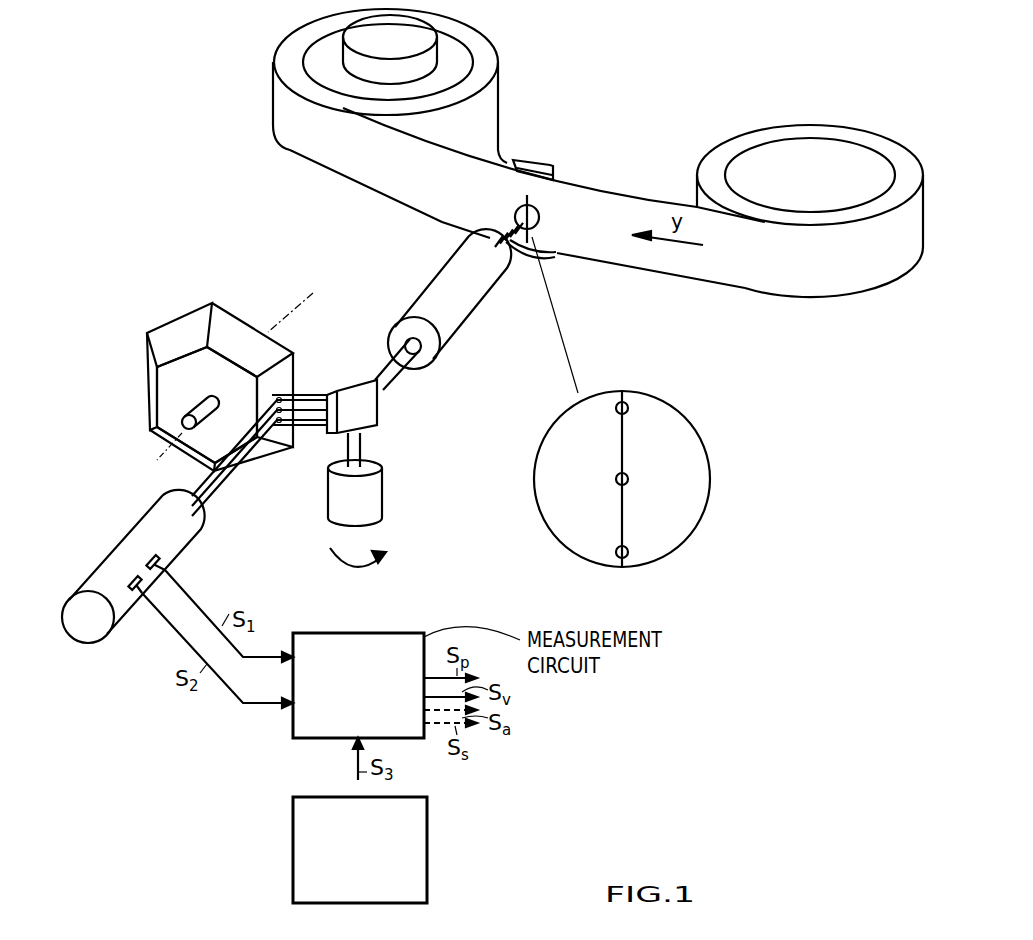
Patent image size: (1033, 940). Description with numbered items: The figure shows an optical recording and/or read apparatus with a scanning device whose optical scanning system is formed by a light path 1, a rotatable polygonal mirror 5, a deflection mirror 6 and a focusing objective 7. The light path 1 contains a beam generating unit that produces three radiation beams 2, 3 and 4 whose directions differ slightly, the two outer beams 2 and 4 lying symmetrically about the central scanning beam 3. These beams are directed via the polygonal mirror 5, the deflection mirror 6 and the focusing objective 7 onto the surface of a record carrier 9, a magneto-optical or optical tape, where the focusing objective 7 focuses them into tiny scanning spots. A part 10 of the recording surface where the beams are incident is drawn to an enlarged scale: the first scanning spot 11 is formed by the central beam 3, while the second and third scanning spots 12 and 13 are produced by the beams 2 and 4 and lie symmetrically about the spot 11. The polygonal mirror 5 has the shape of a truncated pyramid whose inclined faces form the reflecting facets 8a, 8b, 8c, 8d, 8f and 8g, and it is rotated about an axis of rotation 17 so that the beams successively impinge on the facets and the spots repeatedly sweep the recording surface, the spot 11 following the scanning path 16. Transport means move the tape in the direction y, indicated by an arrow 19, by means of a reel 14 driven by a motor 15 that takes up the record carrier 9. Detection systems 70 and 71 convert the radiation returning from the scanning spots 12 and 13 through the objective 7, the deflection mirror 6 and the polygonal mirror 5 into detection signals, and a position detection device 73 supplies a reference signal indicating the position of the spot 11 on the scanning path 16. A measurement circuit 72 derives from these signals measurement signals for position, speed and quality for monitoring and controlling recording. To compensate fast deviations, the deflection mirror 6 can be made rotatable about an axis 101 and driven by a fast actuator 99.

The light path 1 is at (125, 552).
The radiation beam 2 is at (198, 478).
The central scanning beam 3 is at (240, 467).
The radiation beam 4 is at (213, 495).
The rotatable polygonal mirror 5 is at (202, 378).
The deflection mirror 6 is at (373, 414).
The focusing objective 7 is at (465, 312).
The reflecting facet 8a is at (285, 377).
The reflecting facet 8b is at (268, 453).
The reflecting facet 8c is at (157, 438).
The reflecting facet 8d is at (150, 387).
The reflecting facet 8f is at (170, 337).
The reflecting facet 8g is at (243, 338).
The record carrier 9 is at (317, 143).
The part of the recording surface 10 is at (535, 208).
The first scanning spot 11 is at (628, 479).
The second scanning spot 12 is at (627, 412).
The third scanning spot 13 is at (636, 543).
The reel 14 is at (457, 60).
The motor 15 is at (423, 35).
The scanning path 16 is at (533, 235).
The axis of rotation 17 is at (302, 312).
The arrow 19 is at (685, 243).
The detection system 70 is at (172, 562).
The detection system 71 is at (137, 597).
The measurement circuit 72 is at (312, 632).
The position detection device 73 is at (293, 880).
The fast actuator 99 is at (373, 497).
The axis 101 is at (388, 562).